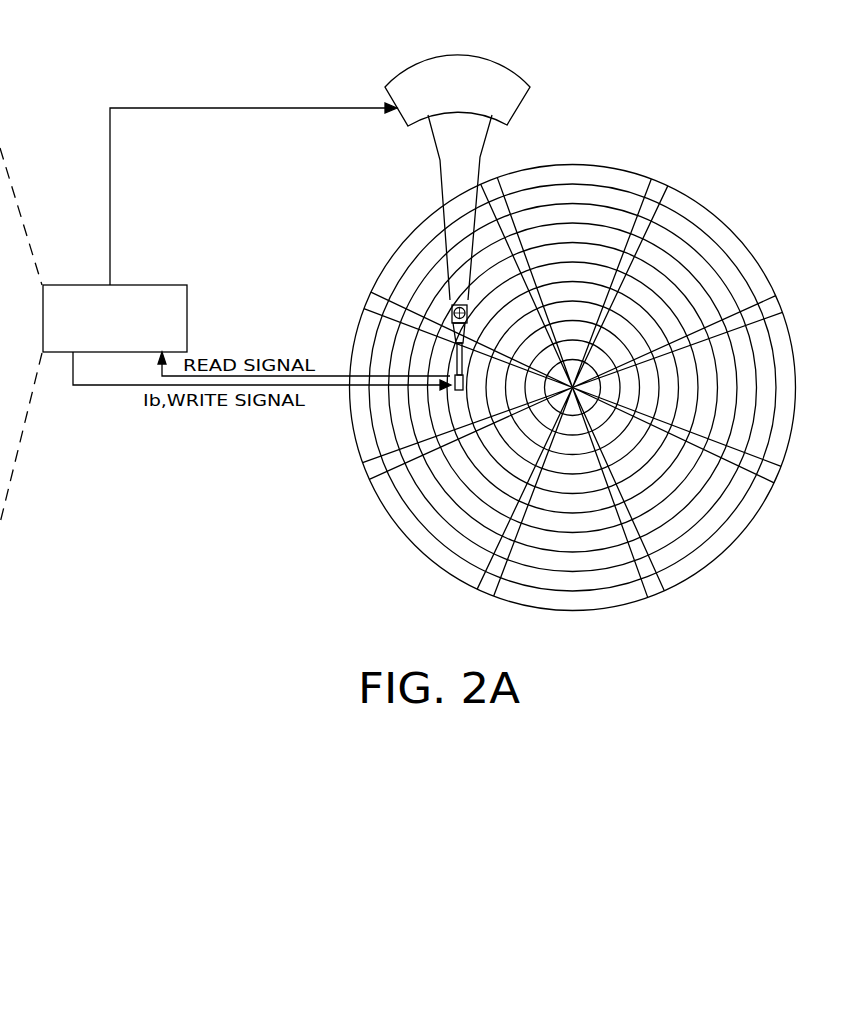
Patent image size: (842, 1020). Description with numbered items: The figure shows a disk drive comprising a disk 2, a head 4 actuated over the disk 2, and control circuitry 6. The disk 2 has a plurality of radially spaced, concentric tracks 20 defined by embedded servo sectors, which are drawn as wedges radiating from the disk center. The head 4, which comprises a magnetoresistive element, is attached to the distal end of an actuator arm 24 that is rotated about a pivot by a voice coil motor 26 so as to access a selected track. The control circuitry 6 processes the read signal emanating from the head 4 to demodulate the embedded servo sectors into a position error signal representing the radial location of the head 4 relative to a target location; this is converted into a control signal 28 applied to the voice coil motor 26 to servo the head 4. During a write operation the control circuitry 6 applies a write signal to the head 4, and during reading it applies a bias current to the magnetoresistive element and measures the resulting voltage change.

The disk 2 is at (584, 380).
The head 4 is at (446, 393).
The control circuitry 6 is at (152, 283).
The tracks 20 is at (572, 196).
The actuator arm 24 is at (440, 183).
The voice coil motor 26 is at (403, 118).
The control signal 28 is at (110, 182).